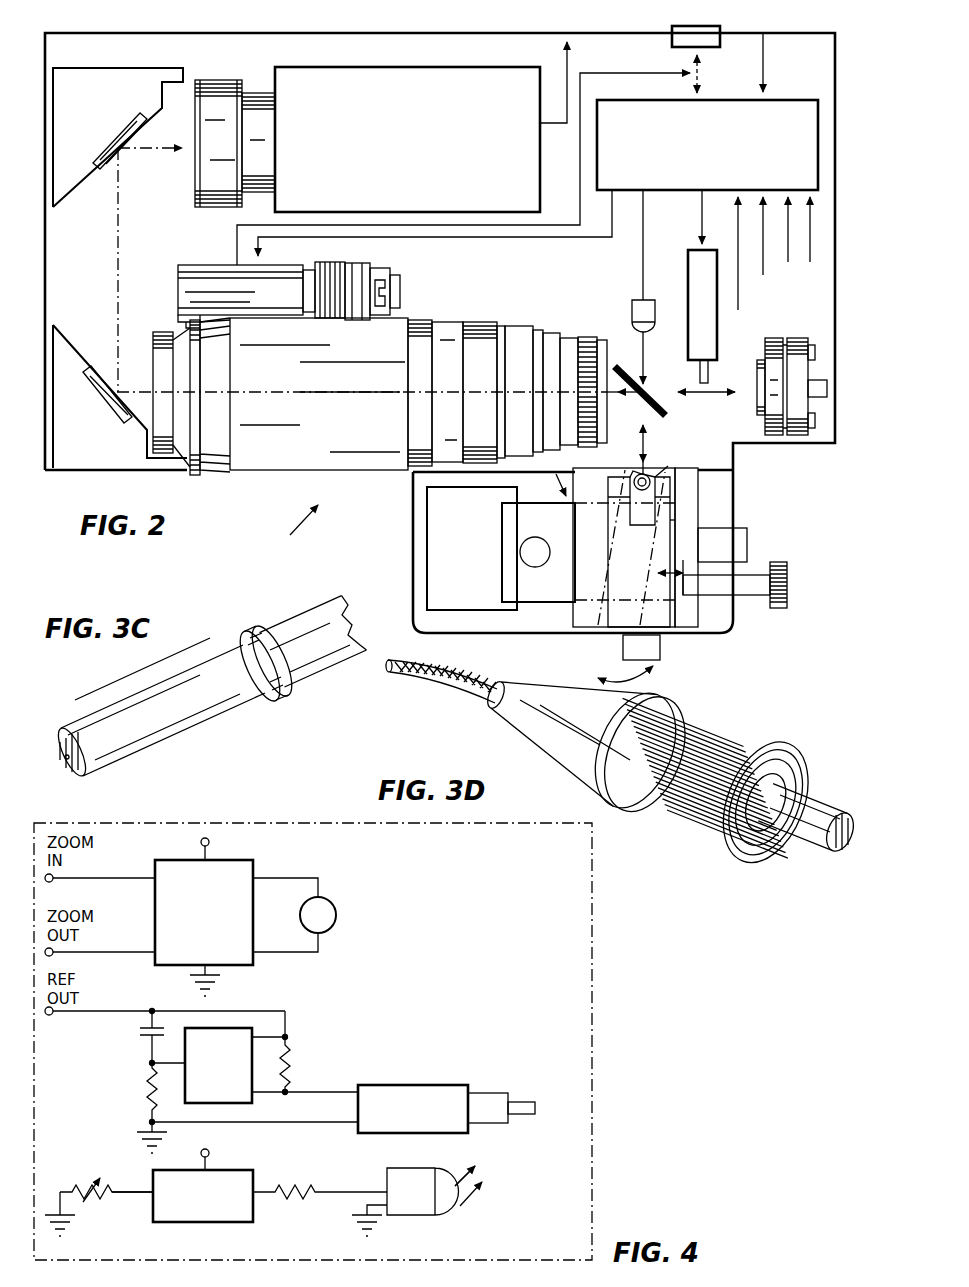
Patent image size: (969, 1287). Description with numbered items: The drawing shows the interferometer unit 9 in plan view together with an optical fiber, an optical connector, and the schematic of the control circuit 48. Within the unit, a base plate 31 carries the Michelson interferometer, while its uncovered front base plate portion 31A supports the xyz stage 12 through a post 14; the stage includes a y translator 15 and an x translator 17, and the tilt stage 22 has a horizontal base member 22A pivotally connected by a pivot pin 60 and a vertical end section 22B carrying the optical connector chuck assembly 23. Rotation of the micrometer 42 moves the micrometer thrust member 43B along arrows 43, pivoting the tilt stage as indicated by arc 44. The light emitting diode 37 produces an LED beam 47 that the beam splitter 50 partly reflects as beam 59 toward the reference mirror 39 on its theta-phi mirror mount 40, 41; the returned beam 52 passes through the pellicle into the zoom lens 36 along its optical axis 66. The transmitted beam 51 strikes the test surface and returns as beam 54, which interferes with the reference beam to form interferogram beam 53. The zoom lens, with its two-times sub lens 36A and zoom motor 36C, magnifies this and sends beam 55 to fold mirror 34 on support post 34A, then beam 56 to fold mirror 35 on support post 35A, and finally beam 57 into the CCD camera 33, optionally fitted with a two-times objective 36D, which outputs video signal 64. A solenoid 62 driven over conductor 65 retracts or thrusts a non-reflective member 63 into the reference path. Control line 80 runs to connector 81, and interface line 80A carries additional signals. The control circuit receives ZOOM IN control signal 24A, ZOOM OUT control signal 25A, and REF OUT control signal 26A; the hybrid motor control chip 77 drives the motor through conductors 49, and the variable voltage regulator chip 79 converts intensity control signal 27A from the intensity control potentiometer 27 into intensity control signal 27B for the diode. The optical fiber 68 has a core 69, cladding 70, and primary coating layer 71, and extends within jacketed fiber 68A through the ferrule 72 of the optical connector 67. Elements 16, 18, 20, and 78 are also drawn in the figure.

In FIG. 2, the interferometer unit 9 is at (298, 528).
In FIG. 2, the xyz stage 12 is at (549, 477).
In FIG. 2, the post 14 is at (462, 510).
In FIG. 2, the y translator 15 is at (518, 593).
In FIG. 2, the y-axis stage 16 is at (538, 552).
In FIG. 2, the x translator 17 is at (690, 480).
In FIG. 2, the x-axis stage 18 is at (748, 548).
In FIG. 2, the z-axis stage 20 is at (623, 645).
In FIG. 2, the tilt stage 22 is at (585, 560).
In FIG. 2, the horizontal base member 22A is at (690, 520).
In FIG. 2, the vertical end section 22B is at (665, 472).
In FIG. 2, the optical connector chuck assembly 23 is at (639, 525).
In FIG. 2, the ZOOM IN control signal 24A is at (738, 305).
In FIG. 4, the ZOOM IN control signal 24A is at (90, 878).
In FIG. 2, the ZOOM OUT control signal 25A is at (763, 270).
In FIG. 4, the ZOOM OUT control signal 25A is at (95, 952).
In FIG. 2, the REF OUT control signal 26A is at (788, 215).
In FIG. 4, the REF OUT control signal 26A is at (90, 1011).
In FIG. 4, the intensity control potentiometer 27 is at (86, 1185).
In FIG. 2, the intensity control signal 27A is at (810, 245).
In FIG. 4, the intensity control signal 27A is at (125, 1192).
In FIG. 2, the intensity control signal 27B is at (643, 225).
In FIG. 4, the intensity control signal 27B is at (348, 1192).
In FIG. 2, the base plate 31 is at (836, 110).
In FIG. 2, the front base plate portion 31A is at (410, 545).
In FIG. 2, the CCD camera 33 is at (432, 72).
In FIG. 2, the fold mirror 34 is at (100, 368).
In FIG. 2, the support post 34A is at (103, 465).
In FIG. 2, the fold mirror 35 is at (108, 170).
In FIG. 2, the support post 35A is at (112, 70).
In FIG. 2, the zoom lens 36 is at (268, 470).
In FIG. 2, the 2X sub lens 36A is at (605, 318).
In FIG. 2, the zoom motor 36C is at (280, 272).
In FIG. 4, the zoom motor 36C is at (335, 903).
In FIG. 2, the 2X objective 36D is at (215, 80).
In FIG. 2, the light emitting diode 37 is at (632, 305).
In FIG. 4, the light emitting diode 37 is at (410, 1205).
In FIG. 2, the reference mirror 39 is at (760, 358).
In FIG. 2, the theta-phi mirror mount 40 is at (775, 336).
In FIG. 2, the theta-phi mirror mount 41 is at (805, 336).
In FIG. 2, the micrometer 42 is at (755, 598).
In FIG. 2, the arrows 43 is at (662, 560).
In FIG. 2, the micrometer thrust member 43B is at (683, 633).
In FIG. 2, the arc 44 is at (592, 675).
In FIG. 2, the LED beam 47 is at (643, 350).
In FIG. 4, the LED beam 47 is at (462, 1204).
In FIG. 2, the control circuit 48 is at (786, 100).
In FIG. 4, the control circuit 48 is at (597, 1083).
In FIG. 2, the conductors 49 is at (555, 240).
In FIG. 4, the conductors 49 is at (318, 875).
In FIG. 2, the beam splitter 50 is at (665, 408).
In FIG. 2, the beam 51 is at (640, 478).
In FIG. 2, the beam 52 is at (665, 395).
In FIG. 2, the interferogram beam 53 is at (632, 400).
In FIG. 2, the beam 54 is at (643, 440).
In FIG. 2, the beam 55 is at (130, 392).
In FIG. 2, the beam 56 is at (118, 255).
In FIG. 2, the beam 57 is at (155, 150).
In FIG. 2, the beam 59 is at (742, 388).
In FIG. 2, the pivot pin 60 is at (635, 480).
In FIG. 2, the solenoid 62 is at (688, 290).
In FIG. 4, the solenoid 62 is at (450, 1085).
In FIG. 2, the non-reflective member 63 is at (745, 325).
In FIG. 4, the non-reflective member 63 is at (522, 1100).
In FIG. 2, the video signal 64 is at (567, 55).
In FIG. 2, the conductor 65 is at (702, 225).
In FIG. 4, the conductor 65 is at (330, 1092).
In FIG. 2, the optical axis 66 is at (302, 390).
In FIG. 3D, the optical connector 67 is at (772, 730).
In FIG. 3C, the optical fiber 68 is at (128, 755).
In FIG. 3D, the optical fiber 68 is at (842, 850).
In FIG. 3D, the jacketed fiber 68A is at (445, 688).
In FIG. 3C, the core 69 is at (64, 760).
In FIG. 3C, the cladding 70 is at (78, 775).
In FIG. 3C, the primary coating layer 71 is at (258, 703).
In FIG. 3D, the ferrule 72 is at (848, 832).
In FIG. 4, the hybrid motor control chip 77 is at (258, 866).
In FIG. 4, the transistor 78 is at (252, 1102).
In FIG. 4, the variable voltage regulator chip 79 is at (220, 1225).
In FIG. 2, the control line 80 is at (572, 222).
In FIG. 2, the interface line 80A is at (697, 85).
In FIG. 2, the connector 81 is at (672, 42).